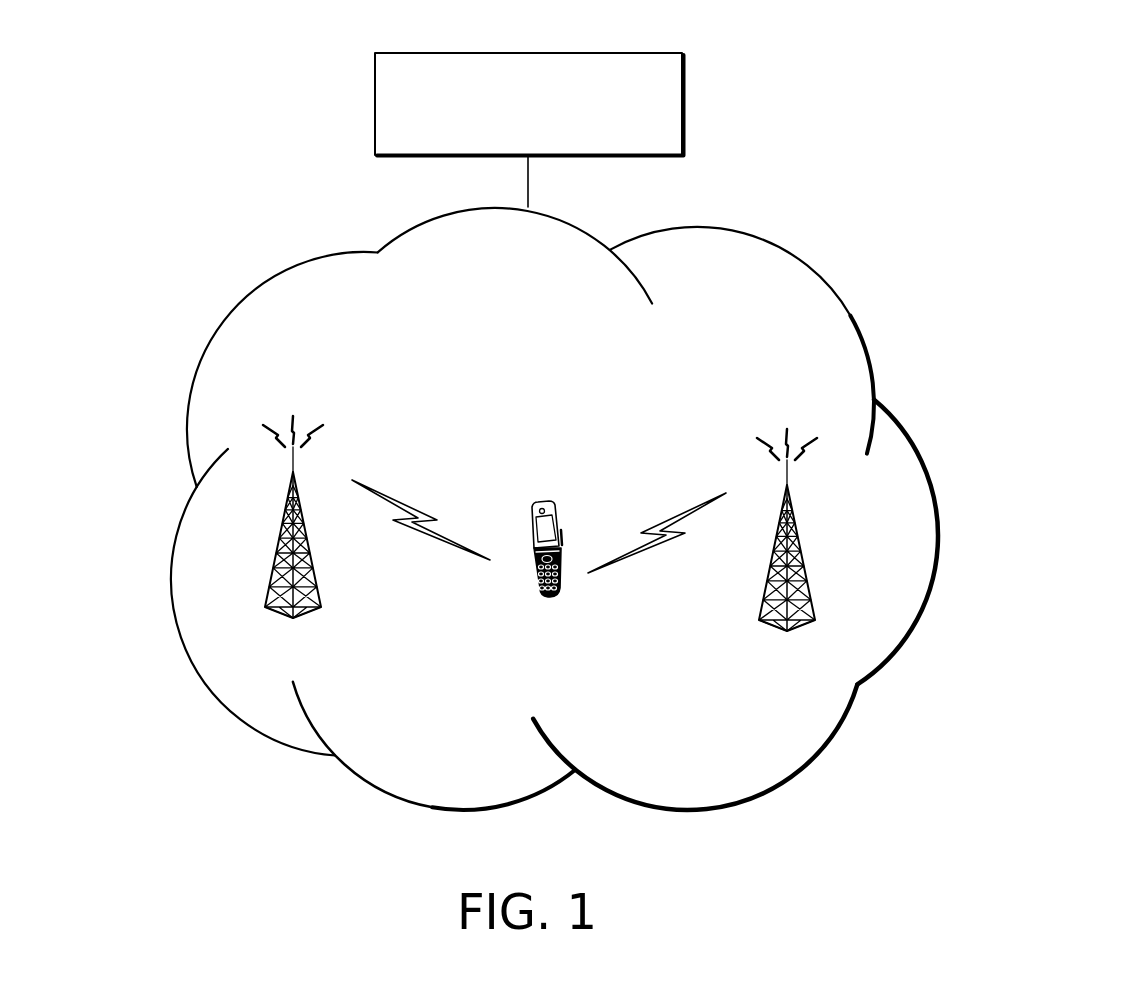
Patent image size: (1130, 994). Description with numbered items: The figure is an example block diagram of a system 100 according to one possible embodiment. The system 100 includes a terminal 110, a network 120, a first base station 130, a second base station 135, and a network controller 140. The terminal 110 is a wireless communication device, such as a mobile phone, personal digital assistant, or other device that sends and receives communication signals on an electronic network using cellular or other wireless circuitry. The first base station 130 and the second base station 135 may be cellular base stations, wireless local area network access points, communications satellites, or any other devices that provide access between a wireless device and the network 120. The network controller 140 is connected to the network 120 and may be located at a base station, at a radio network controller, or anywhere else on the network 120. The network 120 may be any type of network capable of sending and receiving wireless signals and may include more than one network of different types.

The system 100 is at (1044, 184).
The terminal 110 is at (543, 503).
The network 120 is at (802, 262).
The first base station 130 is at (313, 557).
The second base station 135 is at (807, 559).
The network controller 140 is at (684, 103).